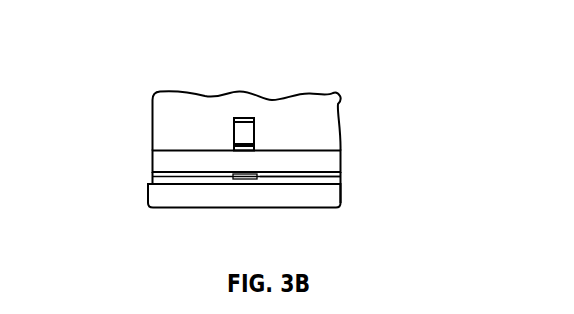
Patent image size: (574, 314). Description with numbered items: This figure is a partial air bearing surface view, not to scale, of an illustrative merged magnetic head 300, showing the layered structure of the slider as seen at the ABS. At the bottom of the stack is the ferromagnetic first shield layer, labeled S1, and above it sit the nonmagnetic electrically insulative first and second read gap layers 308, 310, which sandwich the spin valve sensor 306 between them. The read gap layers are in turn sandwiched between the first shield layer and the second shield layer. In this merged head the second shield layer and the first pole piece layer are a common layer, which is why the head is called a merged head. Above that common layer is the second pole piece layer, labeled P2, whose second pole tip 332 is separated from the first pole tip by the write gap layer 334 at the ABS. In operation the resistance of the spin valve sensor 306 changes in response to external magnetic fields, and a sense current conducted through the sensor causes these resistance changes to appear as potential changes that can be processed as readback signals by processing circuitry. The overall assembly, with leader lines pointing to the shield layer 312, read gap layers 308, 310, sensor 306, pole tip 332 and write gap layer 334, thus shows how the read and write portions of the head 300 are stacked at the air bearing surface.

The merged magnetic head 300 is at (357, 102).
The second pole tip 332 is at (246, 128).
The write gap layer 334 is at (240, 140).
The first shield layer 312 is at (331, 197).
The first read gap layer 308 is at (188, 184).
The spin valve sensor 306 is at (245, 179).
The second read gap layer 310 is at (318, 172).
The pixel P2 is at (254, 133).
The layer S1 is at (244, 196).